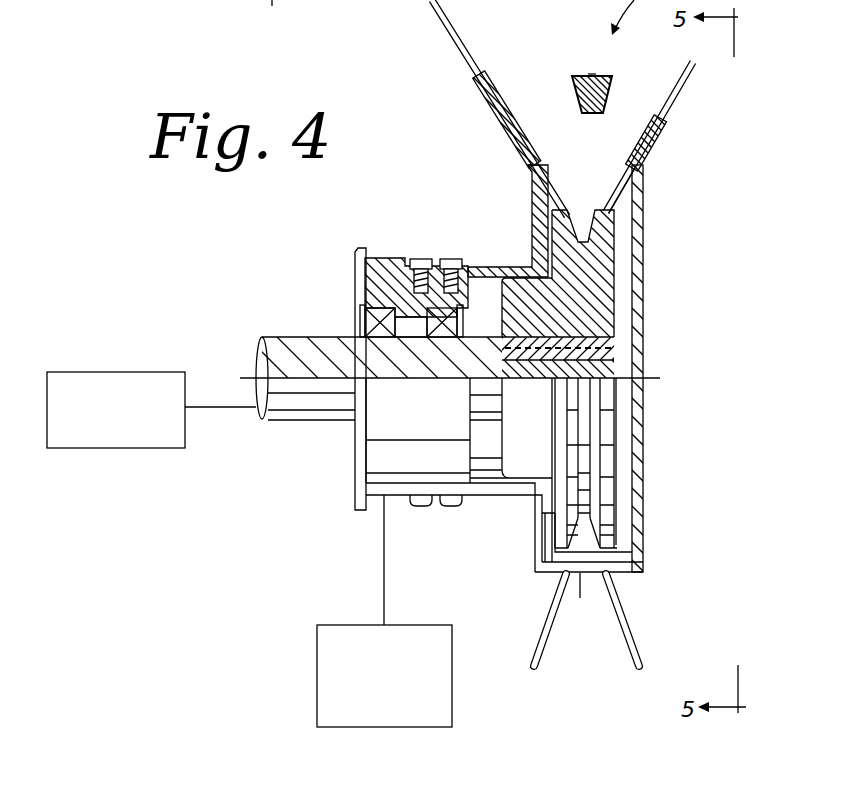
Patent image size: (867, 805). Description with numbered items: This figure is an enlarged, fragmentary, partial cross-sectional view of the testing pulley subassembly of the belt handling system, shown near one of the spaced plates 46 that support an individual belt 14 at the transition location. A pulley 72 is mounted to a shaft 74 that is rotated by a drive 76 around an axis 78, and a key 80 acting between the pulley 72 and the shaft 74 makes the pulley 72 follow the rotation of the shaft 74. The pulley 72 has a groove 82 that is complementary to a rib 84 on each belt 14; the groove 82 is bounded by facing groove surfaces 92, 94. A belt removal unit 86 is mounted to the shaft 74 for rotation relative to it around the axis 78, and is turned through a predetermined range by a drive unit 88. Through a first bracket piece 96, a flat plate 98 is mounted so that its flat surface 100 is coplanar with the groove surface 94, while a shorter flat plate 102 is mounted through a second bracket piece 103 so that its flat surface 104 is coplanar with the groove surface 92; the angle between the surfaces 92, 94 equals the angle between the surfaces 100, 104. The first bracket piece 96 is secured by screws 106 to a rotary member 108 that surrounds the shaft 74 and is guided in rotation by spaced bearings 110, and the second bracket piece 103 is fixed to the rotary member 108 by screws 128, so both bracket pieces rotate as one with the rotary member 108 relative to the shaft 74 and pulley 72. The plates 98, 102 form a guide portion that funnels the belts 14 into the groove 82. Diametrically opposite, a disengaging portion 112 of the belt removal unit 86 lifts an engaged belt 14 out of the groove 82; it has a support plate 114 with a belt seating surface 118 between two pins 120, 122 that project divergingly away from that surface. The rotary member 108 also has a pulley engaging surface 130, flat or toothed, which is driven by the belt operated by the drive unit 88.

The belt 14 is at (596, 74).
The plate 46 is at (275, 16).
The pulley 72 is at (607, 245).
The shaft 74 is at (312, 347).
The drive 76 is at (100, 437).
The axis 78 is at (247, 378).
The key 80 is at (614, 356).
The groove 82 is at (573, 236).
The rib 84 is at (581, 99).
The belt removal unit 86 is at (654, 282).
The drive unit 88 is at (368, 718).
The groove surface 92 is at (595, 213).
The groove surface 94 is at (525, 163).
The first bracket piece 96 is at (500, 262).
The flat plate 98 is at (413, 0).
The flat surface 100 is at (481, 44).
The shorter flat plate 102 is at (693, 62).
The second bracket piece 103 is at (643, 255).
The flat surface 104 is at (666, 97).
The screws 106 is at (451, 258).
The rotary member 108 is at (356, 296).
The bearings 110 is at (444, 328).
The disengaging portion 112 is at (643, 575).
The support plate 114 is at (540, 576).
The belt seating surface 118 is at (579, 579).
The pin 120 is at (530, 650).
The pin 122 is at (637, 630).
The screws 128 is at (418, 507).
The pulley engaging surface 130 is at (384, 258).